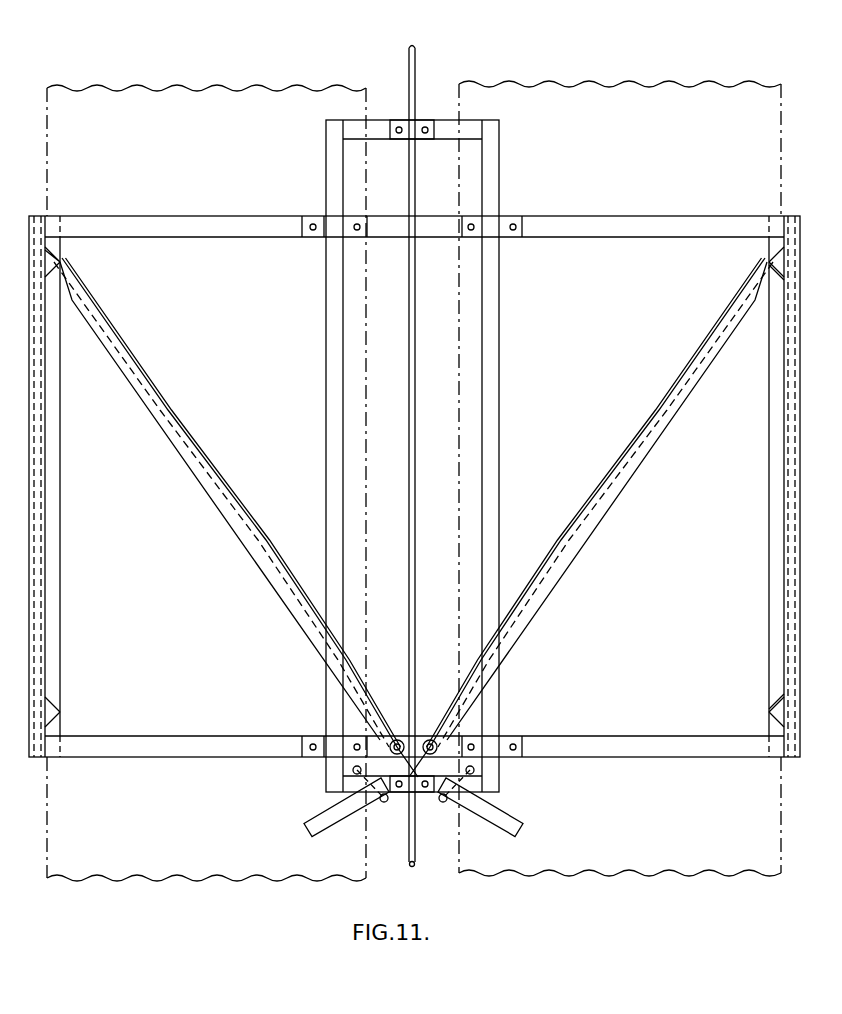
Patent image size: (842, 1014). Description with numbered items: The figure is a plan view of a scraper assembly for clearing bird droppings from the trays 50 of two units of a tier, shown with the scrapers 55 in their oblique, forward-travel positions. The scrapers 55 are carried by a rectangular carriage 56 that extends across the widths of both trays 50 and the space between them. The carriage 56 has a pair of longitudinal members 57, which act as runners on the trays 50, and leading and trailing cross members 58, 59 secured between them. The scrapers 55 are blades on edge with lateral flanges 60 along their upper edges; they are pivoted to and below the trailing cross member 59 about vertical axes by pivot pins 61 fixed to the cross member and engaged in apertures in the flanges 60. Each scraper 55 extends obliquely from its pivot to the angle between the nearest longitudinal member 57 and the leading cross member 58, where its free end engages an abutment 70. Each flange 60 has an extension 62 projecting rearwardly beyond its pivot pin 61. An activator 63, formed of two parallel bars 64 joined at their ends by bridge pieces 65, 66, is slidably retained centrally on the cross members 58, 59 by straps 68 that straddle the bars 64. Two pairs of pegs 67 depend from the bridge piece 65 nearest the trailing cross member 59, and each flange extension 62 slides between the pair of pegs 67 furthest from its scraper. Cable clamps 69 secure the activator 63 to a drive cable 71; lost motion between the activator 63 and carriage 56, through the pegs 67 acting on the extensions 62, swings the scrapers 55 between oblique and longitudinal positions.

The trays 50 is at (181, 112).
The scrapers 55 is at (202, 452).
The carriage 56 is at (226, 762).
The longitudinal members 57 is at (48, 545).
The leading cross member 58 is at (190, 228).
The trailing cross member 59 is at (136, 744).
The lateral flanges 60 is at (236, 508).
The pivot pins 61 is at (414, 742).
The flange extension 62 is at (328, 825).
The activator 63 is at (504, 375).
The parallel bars 64 is at (336, 462).
The bridge piece 65 is at (356, 778).
The bridge piece 66 is at (370, 134).
The pegs 67 is at (383, 804).
The straps 68 is at (310, 220).
The cable clamp 69 is at (419, 127).
The abutments 70 is at (62, 268).
The drive cable 71 is at (418, 52).